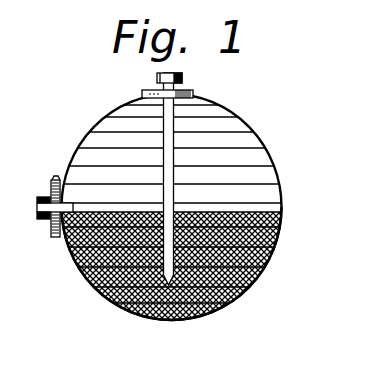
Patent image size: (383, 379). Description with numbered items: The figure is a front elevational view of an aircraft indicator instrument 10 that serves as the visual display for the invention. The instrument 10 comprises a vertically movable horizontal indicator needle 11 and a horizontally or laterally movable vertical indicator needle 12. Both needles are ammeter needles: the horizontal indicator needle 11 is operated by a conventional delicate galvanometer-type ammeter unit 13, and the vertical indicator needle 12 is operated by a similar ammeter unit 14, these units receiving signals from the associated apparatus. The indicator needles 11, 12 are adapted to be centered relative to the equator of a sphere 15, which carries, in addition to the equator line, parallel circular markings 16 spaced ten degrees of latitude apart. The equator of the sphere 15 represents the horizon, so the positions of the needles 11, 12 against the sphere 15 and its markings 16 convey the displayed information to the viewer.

The aircraft instrument 10 is at (266, 83).
The horizontal indicator needle 11 is at (218, 205).
The vertical indicator needle 12 is at (217, 253).
The ammeter unit 13 is at (56, 179).
The ammeter unit 14 is at (193, 95).
The sphere 15 is at (87, 283).
The circular markings 16 is at (255, 184).